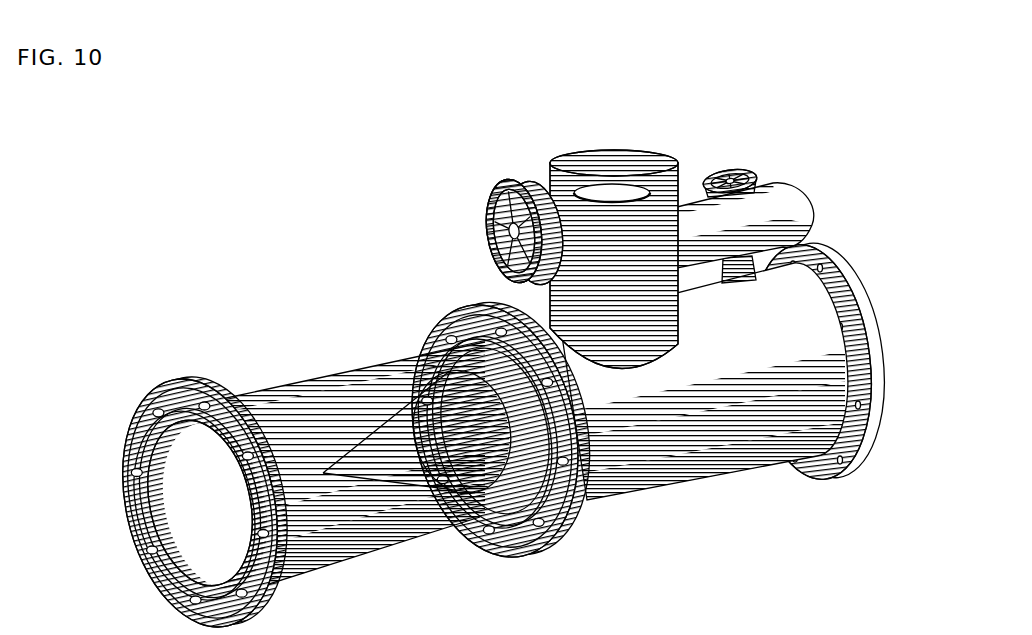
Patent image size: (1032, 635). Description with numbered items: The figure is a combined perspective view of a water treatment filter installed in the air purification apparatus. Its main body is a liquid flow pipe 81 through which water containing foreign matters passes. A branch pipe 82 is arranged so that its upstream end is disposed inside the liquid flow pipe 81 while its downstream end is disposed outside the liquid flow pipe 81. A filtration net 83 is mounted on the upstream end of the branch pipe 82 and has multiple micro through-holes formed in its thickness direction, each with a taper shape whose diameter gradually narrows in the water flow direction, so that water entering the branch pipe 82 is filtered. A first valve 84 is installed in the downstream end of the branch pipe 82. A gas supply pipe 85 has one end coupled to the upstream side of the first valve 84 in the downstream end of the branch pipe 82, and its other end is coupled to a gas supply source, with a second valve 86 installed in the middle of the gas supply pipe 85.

The liquid flow pipe 81 is at (745, 462).
The branch pipe 82 is at (647, 364).
The filtration net 83 is at (401, 487).
The first valve 84 is at (488, 226).
The gas supply pipe 85 is at (779, 186).
The second valve 86 is at (730, 168).